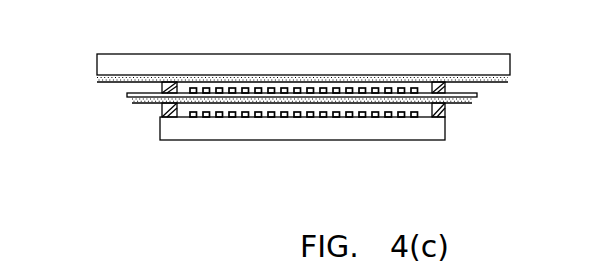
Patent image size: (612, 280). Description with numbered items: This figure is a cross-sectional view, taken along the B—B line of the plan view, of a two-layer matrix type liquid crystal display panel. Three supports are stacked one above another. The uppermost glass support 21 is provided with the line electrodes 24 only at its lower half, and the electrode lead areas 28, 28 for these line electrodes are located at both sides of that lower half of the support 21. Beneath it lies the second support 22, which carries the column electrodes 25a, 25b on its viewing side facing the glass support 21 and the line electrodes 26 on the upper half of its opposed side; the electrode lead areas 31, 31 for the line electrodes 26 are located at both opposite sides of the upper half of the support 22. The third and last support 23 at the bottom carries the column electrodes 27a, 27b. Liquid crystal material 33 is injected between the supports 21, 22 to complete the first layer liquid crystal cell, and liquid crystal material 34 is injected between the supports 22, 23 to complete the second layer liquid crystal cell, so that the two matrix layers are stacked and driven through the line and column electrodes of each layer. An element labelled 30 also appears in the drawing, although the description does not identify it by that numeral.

The glass support 21 is at (464, 62).
The second support 22 is at (478, 96).
The third support 23 is at (428, 130).
The line electrodes 24 is at (293, 50).
The column electrode 25a is at (194, 88).
The column electrode 25b is at (207, 88).
The line electrodes 26 is at (295, 157).
The column electrode 27a is at (192, 118).
The column electrode 27b is at (207, 118).
The electrode lead areas 28 is at (97, 81).
The spacer 30 is at (160, 110).
The electrode lead areas 31 is at (130, 103).
The liquid crystal material 33 is at (368, 85).
The liquid crystal material 34 is at (348, 117).